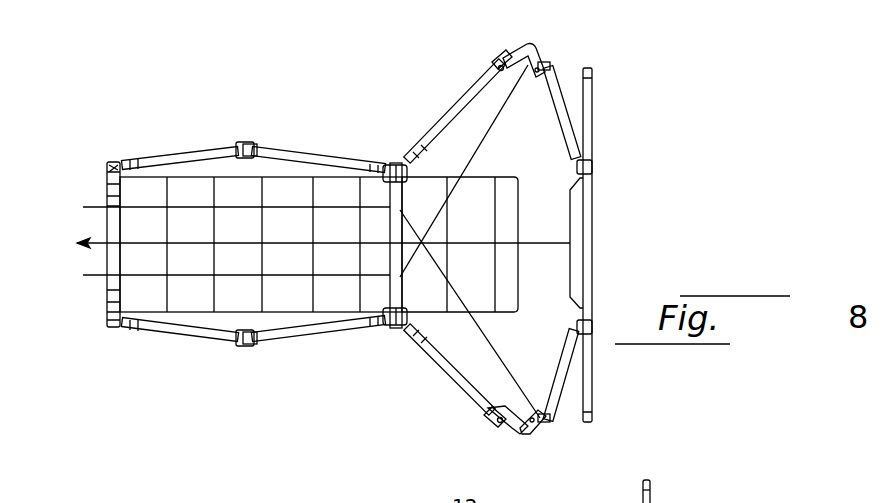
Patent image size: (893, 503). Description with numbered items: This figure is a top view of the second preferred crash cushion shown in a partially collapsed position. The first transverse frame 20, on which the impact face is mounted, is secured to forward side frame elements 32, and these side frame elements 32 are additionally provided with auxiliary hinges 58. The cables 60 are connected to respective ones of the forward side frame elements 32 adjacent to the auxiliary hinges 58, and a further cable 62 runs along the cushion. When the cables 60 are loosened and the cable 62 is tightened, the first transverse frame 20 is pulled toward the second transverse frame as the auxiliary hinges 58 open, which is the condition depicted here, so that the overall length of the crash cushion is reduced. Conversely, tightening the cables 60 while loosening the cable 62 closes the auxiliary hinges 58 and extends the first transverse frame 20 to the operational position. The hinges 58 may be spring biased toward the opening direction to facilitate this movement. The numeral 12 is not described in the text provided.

The spacecraft body frame 12 is at (378, 148).
The first transverse frame 20 is at (592, 208).
The forward side frame elements 32 is at (540, 72).
The auxiliary hinges 58 is at (538, 70).
The cables 60 is at (143, 206).
The cable 62 is at (100, 237).